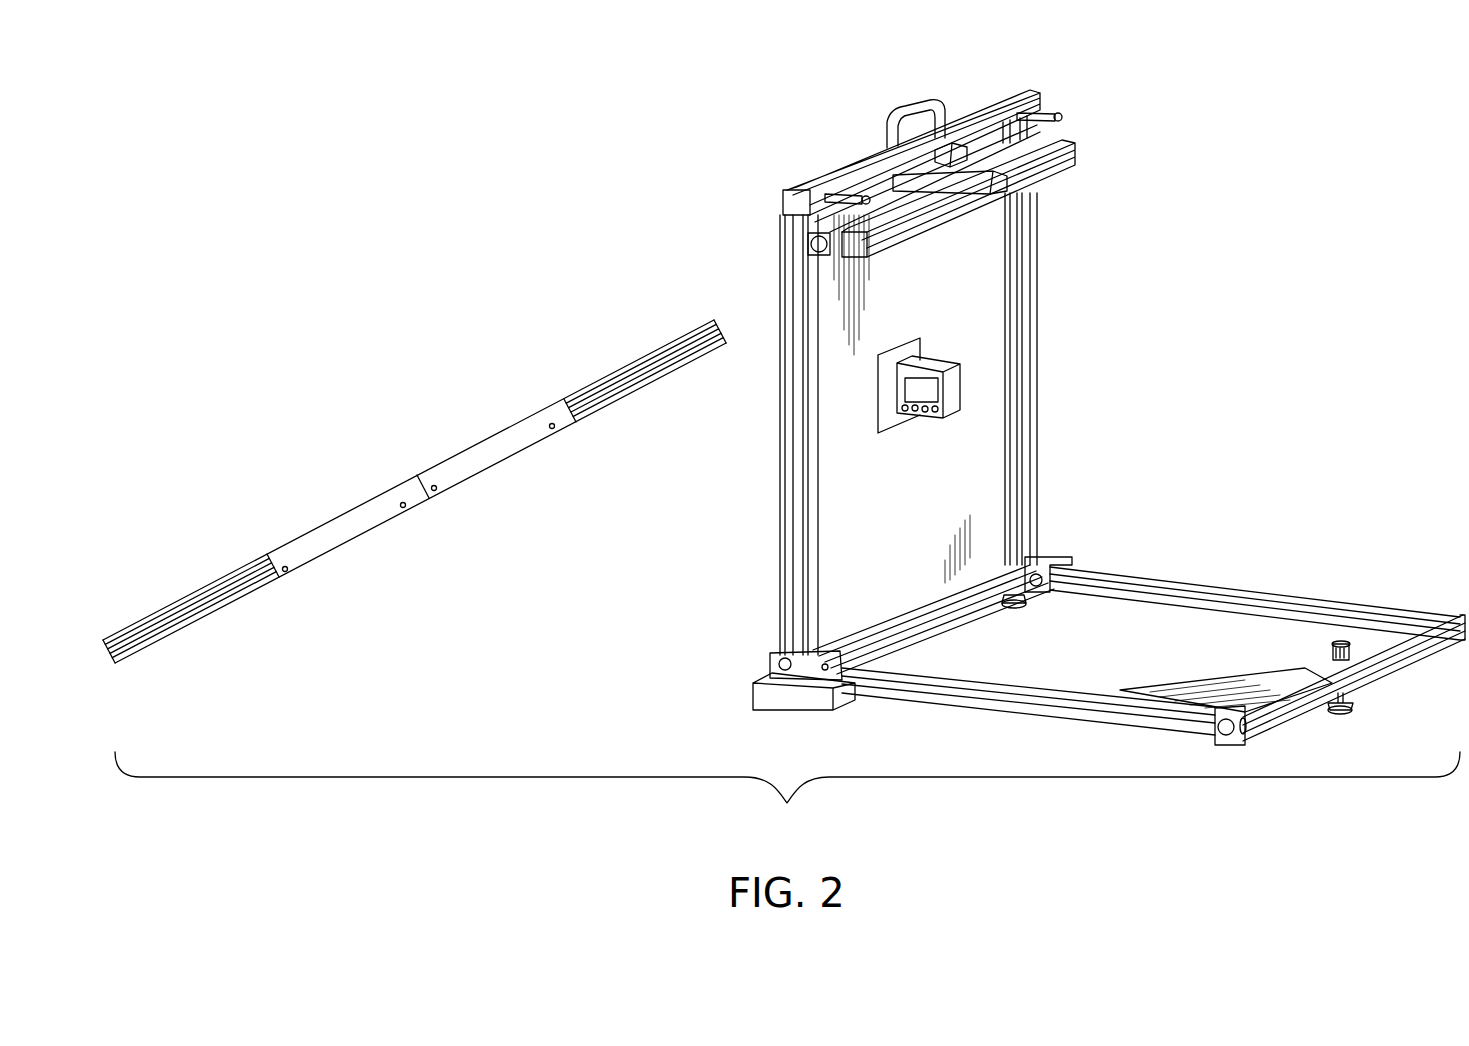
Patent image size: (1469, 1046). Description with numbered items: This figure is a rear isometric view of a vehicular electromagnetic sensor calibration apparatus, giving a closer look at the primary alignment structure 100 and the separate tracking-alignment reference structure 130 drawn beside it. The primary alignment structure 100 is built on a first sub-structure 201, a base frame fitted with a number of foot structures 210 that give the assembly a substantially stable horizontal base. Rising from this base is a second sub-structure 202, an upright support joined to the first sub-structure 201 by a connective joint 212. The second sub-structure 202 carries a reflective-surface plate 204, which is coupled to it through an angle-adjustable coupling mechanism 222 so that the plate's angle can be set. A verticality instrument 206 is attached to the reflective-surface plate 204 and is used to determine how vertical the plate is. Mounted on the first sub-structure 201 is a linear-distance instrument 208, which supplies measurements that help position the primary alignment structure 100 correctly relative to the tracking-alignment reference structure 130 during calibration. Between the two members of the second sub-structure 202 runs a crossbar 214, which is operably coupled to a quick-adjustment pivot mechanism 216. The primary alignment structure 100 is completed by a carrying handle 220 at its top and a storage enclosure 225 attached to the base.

The primary alignment structure 100 is at (1311, 178).
The tracking-alignment reference structure 130 is at (517, 430).
The first sub-structure 201 is at (1412, 611).
The second sub-structure 202 is at (787, 590).
The reflective-surface plate 204 is at (995, 289).
The verticality instrument 206 is at (952, 395).
The linear-distance instrument 208 is at (763, 694).
The foot structures 210 is at (1024, 606).
The connective joint 212 is at (1047, 558).
The crossbar 214 is at (1070, 158).
The quick-adjustment pivot mechanism 216 is at (998, 189).
The carrying handle 220 is at (917, 108).
The angle-adjustable coupling mechanism 222 is at (1065, 118).
The storage enclosure 225 is at (1197, 693).